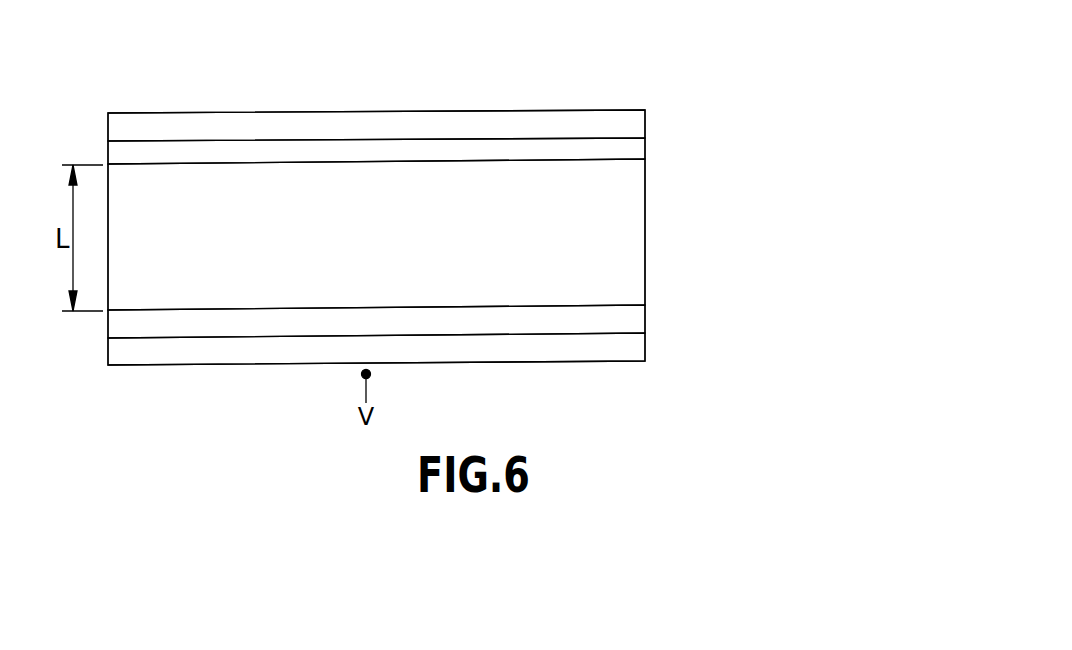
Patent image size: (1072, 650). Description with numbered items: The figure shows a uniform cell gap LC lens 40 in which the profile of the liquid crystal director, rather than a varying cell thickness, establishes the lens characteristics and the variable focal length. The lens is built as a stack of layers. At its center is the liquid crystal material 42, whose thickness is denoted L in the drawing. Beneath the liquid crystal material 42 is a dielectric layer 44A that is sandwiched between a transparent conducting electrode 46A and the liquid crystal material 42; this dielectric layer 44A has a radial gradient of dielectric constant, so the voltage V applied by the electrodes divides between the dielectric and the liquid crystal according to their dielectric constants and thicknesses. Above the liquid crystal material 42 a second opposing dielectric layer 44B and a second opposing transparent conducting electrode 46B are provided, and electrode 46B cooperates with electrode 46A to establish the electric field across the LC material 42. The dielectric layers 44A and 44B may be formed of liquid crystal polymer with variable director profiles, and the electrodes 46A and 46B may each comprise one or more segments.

The uniform cell gap LC lens 40 is at (566, 213).
The liquid crystal material 42 is at (347, 177).
The dielectric layer 44A is at (630, 322).
The second opposing dielectric layer 44B is at (633, 152).
The transparent conducting electrode 46A is at (632, 352).
The second opposing transparent conducting electrode 46B is at (633, 123).